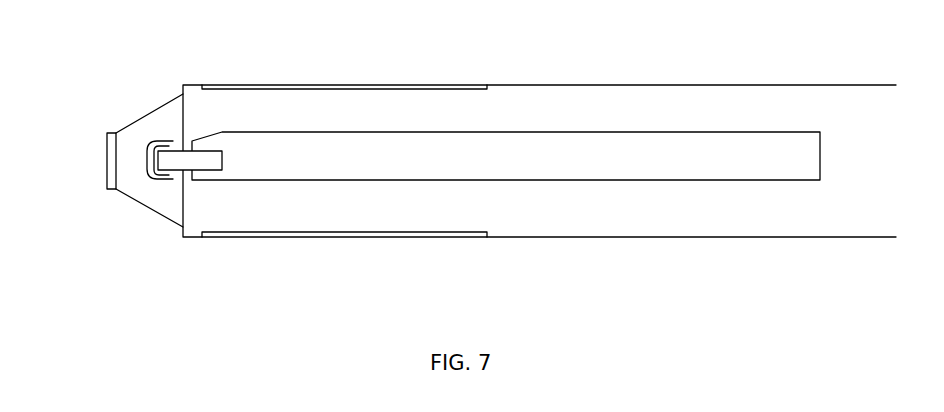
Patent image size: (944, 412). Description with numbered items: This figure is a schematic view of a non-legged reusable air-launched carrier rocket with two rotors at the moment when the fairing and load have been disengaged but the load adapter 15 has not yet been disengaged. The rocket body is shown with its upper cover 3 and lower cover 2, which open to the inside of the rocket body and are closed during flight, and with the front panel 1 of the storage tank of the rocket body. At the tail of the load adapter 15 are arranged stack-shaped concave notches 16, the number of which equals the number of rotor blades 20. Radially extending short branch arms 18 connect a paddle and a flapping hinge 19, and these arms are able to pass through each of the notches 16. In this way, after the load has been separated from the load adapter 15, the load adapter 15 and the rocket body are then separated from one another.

The front panel of the storage tank 1 is at (183, 207).
The lower cover 2 is at (242, 235).
The upper cover 3 is at (325, 85).
The load adapter 15 is at (132, 160).
The stack-shaped concave notches 16 is at (150, 177).
The radially extending short branch arms 18 is at (148, 148).
The flapping hinge 19 is at (165, 158).
The rotor blades 20 is at (630, 160).